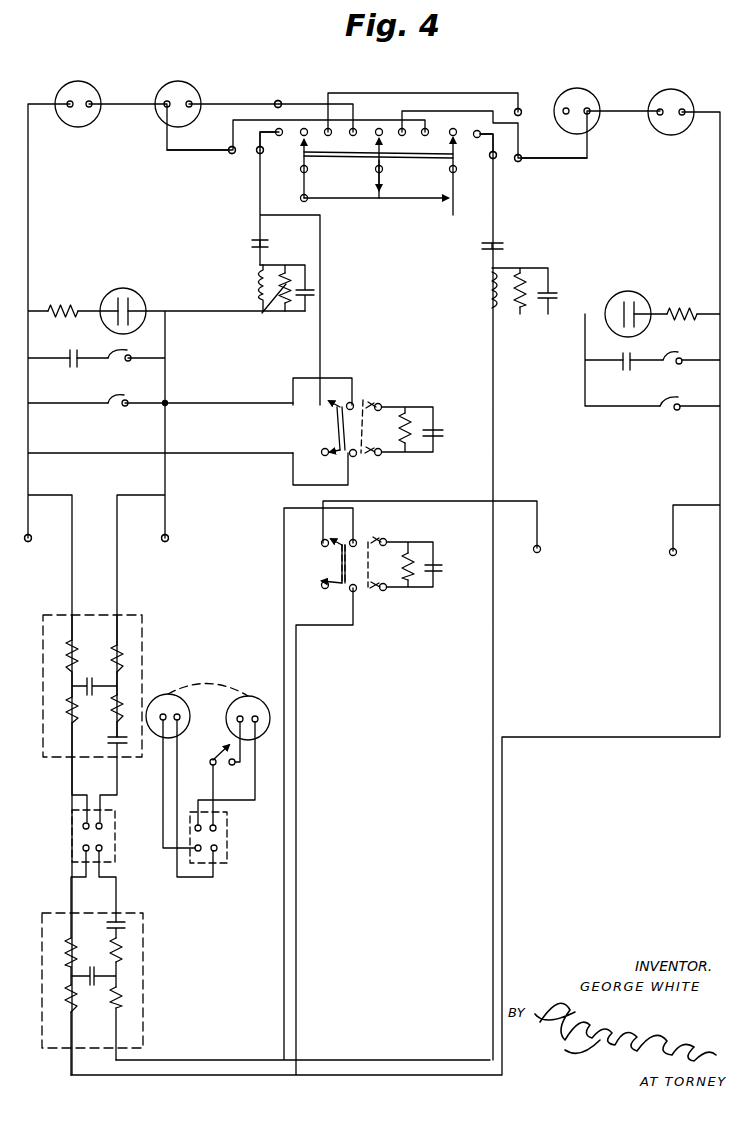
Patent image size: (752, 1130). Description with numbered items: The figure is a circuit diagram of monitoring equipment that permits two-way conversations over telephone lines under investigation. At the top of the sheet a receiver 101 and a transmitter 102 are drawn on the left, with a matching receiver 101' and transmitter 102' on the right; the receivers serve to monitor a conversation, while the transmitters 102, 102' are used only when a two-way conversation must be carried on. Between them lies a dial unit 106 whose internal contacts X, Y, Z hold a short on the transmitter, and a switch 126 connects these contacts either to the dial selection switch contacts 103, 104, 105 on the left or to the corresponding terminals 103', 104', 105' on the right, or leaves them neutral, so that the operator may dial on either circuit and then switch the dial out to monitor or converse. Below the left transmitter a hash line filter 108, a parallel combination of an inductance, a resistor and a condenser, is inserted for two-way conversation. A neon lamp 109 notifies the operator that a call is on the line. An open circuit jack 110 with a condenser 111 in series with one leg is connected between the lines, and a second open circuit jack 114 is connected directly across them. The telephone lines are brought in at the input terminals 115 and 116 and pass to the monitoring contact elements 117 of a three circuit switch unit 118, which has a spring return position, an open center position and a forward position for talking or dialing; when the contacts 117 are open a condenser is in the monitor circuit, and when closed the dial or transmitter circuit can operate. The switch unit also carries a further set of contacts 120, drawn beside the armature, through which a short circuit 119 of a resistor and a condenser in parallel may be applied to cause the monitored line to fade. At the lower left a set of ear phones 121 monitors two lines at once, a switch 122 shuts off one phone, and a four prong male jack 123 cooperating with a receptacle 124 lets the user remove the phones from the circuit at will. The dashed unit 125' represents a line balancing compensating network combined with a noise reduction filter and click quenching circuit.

The receiver 101 is at (78, 113).
The transmitter 102 is at (196, 164).
The dial selection switch contact 103 is at (251, 156).
The dial selection switch contact 104 is at (279, 93).
The dial selection switch contact 105 is at (201, 161).
The dial unit 106 is at (354, 186).
The hash line filter 108 is at (264, 313).
The neon lamp 109 is at (172, 281).
The open circuit jack 110 is at (117, 362).
The condenser 111 is at (65, 366).
The open circuit jack 114 is at (113, 410).
The input terminal 115 is at (27, 542).
The input terminal 116 is at (168, 540).
The monitoring contact element 117 is at (337, 412).
The three circuit switch unit 118 is at (350, 455).
The short circuit 119 is at (410, 424).
The relay contacts 120 is at (372, 402).
The set of ear phones 121 is at (192, 709).
The switch 122 is at (230, 746).
The four prong male jack 123 is at (227, 855).
The receptacle 124 is at (115, 855).
The filter network 125' is at (84, 718).
The switch 126 is at (445, 160).
The receiver 101' is at (677, 122).
The transmitter 102' is at (593, 117).
The dial selection switch terminal 103' is at (508, 162).
The dial selection switch terminal 104' is at (533, 96).
The dial selection switch terminal 105' is at (551, 151).